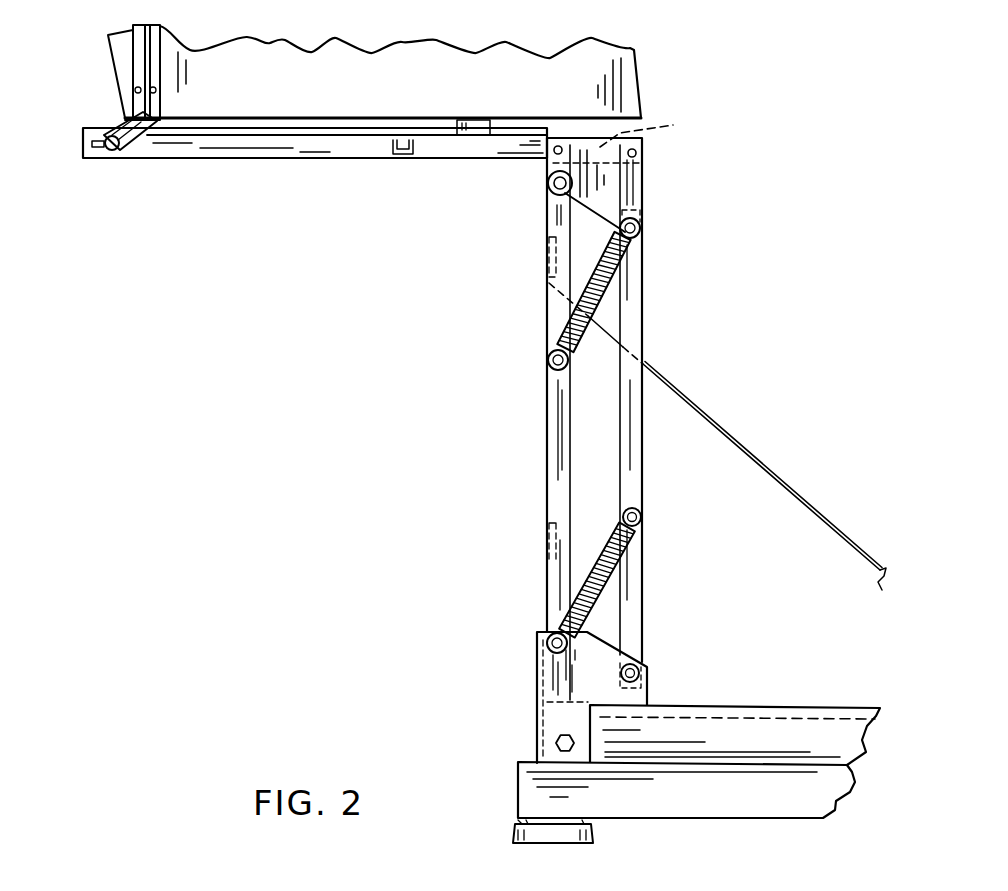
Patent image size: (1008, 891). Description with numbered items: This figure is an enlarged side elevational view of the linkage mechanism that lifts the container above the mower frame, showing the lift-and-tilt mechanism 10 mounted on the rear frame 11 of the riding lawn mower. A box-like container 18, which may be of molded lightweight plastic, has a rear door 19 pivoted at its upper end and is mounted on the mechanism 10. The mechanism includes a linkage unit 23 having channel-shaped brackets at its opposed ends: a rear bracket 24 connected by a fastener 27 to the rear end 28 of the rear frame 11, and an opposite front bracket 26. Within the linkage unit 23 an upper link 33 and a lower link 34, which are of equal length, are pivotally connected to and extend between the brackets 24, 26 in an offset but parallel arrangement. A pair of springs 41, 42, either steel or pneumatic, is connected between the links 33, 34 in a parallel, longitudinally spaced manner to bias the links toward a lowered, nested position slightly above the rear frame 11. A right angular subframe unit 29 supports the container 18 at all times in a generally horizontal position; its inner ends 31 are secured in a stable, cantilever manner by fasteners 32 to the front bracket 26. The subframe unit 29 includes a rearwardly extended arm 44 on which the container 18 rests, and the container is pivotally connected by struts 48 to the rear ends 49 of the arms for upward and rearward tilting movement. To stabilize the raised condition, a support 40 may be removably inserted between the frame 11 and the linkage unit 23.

The lift-and-tilt mechanism 10 is at (428, 373).
The rear frame 11 is at (530, 801).
The container 18 is at (613, 83).
The rear door 19 is at (122, 70).
The linkage units 23 is at (505, 467).
The rear bracket 24 is at (548, 672).
The front bracket 26 is at (627, 187).
The fastener 27 is at (555, 743).
The rear end 28 is at (530, 772).
The subframe unit 29 is at (333, 187).
The inner ends 31 is at (657, 131).
The fasteners 32 is at (556, 153).
The upper link 33 is at (552, 497).
The lower link 34 is at (635, 320).
The support 40 is at (743, 450).
The spring 41 is at (597, 593).
The spring 42 is at (607, 277).
The arm 44 is at (260, 140).
The struts 48 is at (123, 148).
The rear ends 49 is at (163, 152).